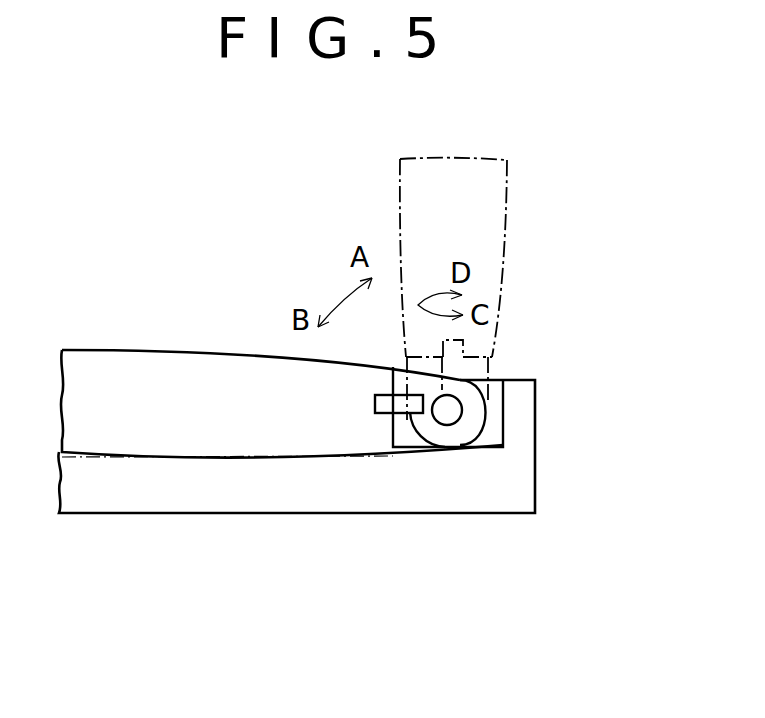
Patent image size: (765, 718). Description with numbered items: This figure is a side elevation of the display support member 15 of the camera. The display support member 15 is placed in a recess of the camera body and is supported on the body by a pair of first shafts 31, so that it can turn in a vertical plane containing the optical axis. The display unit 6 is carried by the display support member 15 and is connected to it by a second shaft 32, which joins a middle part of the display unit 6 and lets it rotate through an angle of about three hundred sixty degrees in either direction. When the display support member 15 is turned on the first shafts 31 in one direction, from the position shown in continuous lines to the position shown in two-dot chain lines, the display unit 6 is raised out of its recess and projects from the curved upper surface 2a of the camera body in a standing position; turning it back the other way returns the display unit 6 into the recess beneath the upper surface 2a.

The display unit 6 is at (507, 223).
The curved upper surface 2a is at (500, 380).
The display support member 15 is at (410, 444).
The first shafts 31 is at (448, 416).
The second shaft 32 is at (465, 345).